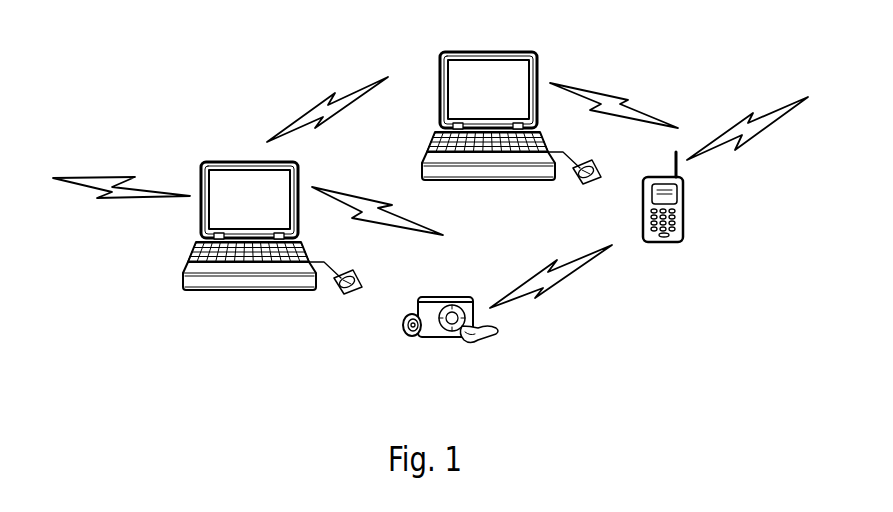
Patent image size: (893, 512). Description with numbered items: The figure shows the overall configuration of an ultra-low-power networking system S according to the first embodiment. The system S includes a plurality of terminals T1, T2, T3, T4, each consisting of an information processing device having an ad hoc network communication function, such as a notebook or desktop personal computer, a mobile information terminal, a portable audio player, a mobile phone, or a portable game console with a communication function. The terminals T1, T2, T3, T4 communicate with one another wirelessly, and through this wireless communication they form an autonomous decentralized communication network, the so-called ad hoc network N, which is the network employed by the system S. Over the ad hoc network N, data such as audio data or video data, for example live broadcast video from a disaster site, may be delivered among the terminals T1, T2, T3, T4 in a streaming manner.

The terminal T1 is at (557, 50).
The terminal T2 is at (318, 161).
The terminal T3 is at (466, 284).
The terminal T4 is at (695, 223).
The ad hoc network N is at (609, 100).
The ultra-low-power networking system S is at (701, 51).